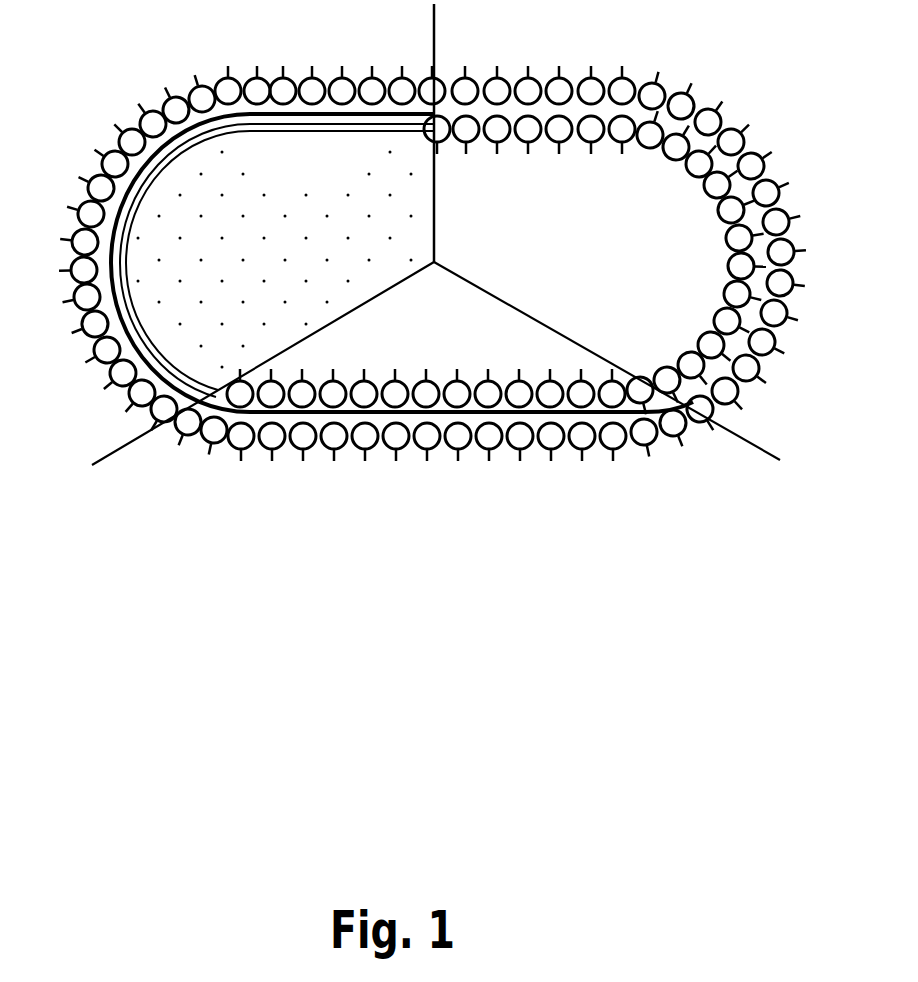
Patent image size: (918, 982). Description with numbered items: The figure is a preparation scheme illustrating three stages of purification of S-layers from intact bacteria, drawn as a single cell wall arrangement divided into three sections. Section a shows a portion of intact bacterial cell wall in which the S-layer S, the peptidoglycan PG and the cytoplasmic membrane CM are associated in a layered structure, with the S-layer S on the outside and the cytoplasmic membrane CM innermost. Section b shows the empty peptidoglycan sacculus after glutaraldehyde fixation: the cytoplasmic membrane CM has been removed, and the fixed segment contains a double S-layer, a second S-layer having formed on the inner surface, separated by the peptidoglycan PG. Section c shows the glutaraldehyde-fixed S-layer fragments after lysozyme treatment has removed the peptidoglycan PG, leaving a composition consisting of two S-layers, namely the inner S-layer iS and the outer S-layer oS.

The S-layer S is at (258, 89).
The outer S-layer oS is at (497, 92).
The inner S-layer iS is at (499, 133).
The peptidoglycan PG is at (333, 113).
The cytoplasmic membrane CM is at (243, 132).
The section a is at (240, 240).
The section b is at (446, 269).
The section c is at (626, 237).